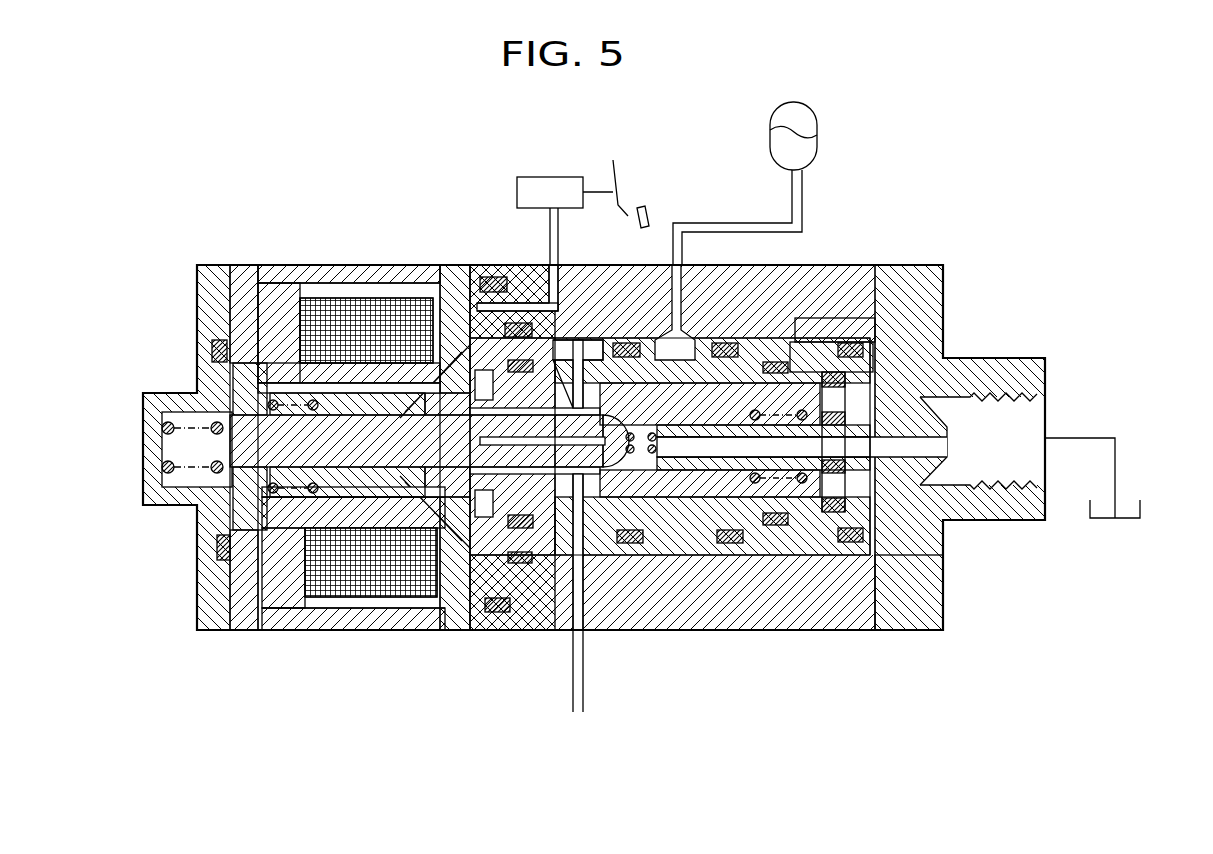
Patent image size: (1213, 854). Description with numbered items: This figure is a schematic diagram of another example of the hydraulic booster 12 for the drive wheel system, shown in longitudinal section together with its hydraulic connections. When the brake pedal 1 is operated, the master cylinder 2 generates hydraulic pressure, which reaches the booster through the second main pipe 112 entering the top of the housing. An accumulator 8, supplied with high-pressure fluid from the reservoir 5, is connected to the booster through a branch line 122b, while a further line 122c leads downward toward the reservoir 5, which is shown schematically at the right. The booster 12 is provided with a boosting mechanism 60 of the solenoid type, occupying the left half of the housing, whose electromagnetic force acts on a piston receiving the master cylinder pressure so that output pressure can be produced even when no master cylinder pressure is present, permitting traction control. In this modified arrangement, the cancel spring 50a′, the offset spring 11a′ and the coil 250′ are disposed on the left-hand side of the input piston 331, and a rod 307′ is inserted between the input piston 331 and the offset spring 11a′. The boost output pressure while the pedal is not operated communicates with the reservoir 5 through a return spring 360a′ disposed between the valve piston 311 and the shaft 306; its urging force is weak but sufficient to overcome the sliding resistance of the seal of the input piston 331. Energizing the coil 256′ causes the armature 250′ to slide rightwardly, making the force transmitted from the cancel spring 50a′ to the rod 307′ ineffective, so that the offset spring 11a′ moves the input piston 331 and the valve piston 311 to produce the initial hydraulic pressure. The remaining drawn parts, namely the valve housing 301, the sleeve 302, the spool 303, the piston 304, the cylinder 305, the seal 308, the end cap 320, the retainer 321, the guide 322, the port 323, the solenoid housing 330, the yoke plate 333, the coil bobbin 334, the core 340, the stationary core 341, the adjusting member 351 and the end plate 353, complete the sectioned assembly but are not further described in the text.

The brake pedal 1 is at (648, 210).
The master cylinder 2 is at (548, 177).
The reservoir 5 is at (1148, 510).
The accumulator 8 is at (812, 105).
The hydraulic booster 12 is at (944, 242).
The boosting mechanism 60 is at (268, 250).
The second main pipe 112 is at (558, 232).
The accumulator conduit 122b is at (690, 223).
The reservoir conduit 122c is at (572, 700).
The offset spring 11a′ is at (162, 428).
The coil 256′ is at (240, 378).
The rod 307′ is at (242, 500).
The cancel spring 50a′ is at (252, 553).
The armature 250′ is at (368, 598).
The valve housing 301 is at (835, 265).
The valve sleeve 302 is at (600, 575).
The valve spool 303 is at (808, 585).
The piston 304 is at (760, 570).
The cylinder 305 is at (690, 575).
The shaft 306 is at (918, 590).
The seal ring 308 is at (883, 585).
The valve piston 311 is at (486, 598).
The end cap 320 is at (945, 263).
The retainer 321 is at (878, 347).
The guide 322 is at (870, 382).
The port 323 is at (548, 585).
The solenoid housing 330 is at (197, 290).
The input piston 331 is at (475, 575).
The yoke plate 333 is at (242, 275).
The coil bobbin 334 is at (356, 270).
The core 340 is at (293, 300).
The stationary core 341 is at (458, 290).
The adjusting member 351 is at (480, 296).
The end plate 353 is at (294, 615).
The return spring 360a′ is at (682, 572).